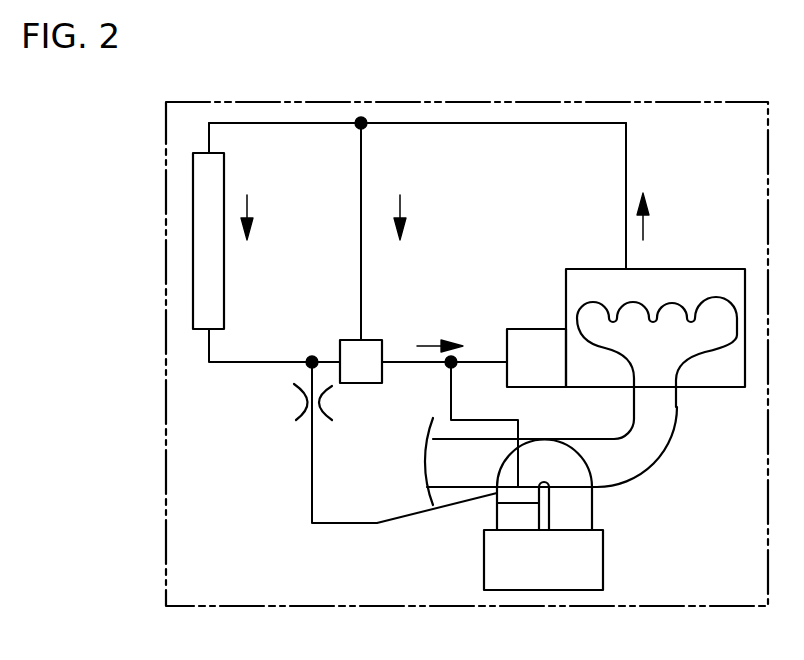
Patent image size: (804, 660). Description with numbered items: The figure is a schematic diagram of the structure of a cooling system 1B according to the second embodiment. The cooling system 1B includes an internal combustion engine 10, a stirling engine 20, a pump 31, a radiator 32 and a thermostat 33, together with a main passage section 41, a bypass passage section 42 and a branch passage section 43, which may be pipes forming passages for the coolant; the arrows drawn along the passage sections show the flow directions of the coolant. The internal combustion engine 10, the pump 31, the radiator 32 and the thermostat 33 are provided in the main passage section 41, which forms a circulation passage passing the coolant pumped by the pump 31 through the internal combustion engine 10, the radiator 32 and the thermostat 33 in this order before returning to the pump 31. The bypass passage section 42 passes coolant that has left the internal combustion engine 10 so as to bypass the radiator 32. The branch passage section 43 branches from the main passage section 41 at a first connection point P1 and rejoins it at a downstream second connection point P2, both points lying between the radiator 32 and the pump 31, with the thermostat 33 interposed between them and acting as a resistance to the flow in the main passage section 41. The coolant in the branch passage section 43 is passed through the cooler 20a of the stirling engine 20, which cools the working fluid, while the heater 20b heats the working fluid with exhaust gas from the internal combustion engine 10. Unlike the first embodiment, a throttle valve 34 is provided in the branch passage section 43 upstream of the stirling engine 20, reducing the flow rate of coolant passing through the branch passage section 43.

The cooling system 1B is at (166, 158).
The internal combustion engine 10 is at (697, 269).
The stirling engine 20 is at (603, 560).
The cooler 20a is at (500, 497).
The heater 20b is at (580, 463).
The pump 31 is at (535, 329).
The radiator 32 is at (224, 290).
The thermostat 33 is at (350, 340).
The throttle valve 34 is at (298, 414).
The main passage section 41 is at (626, 157).
The bypass passage section 42 is at (361, 157).
The branch passage section 43 is at (312, 478).
The first connection point P1 is at (308, 364).
The second connection point P2 is at (447, 367).